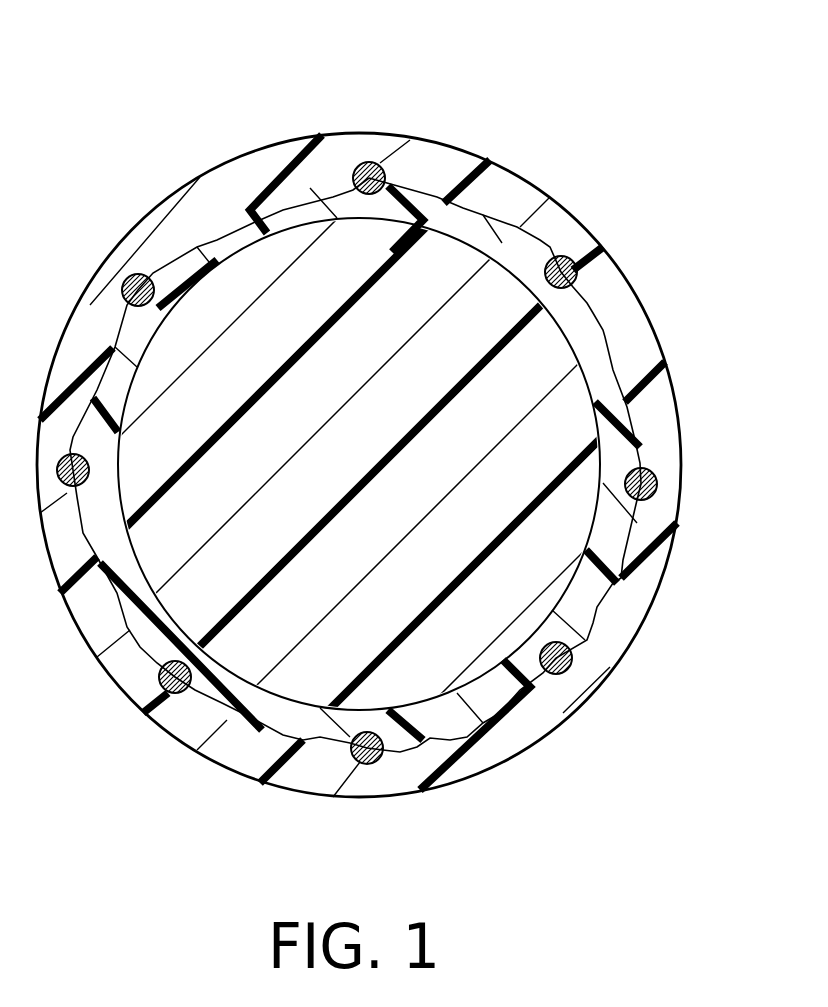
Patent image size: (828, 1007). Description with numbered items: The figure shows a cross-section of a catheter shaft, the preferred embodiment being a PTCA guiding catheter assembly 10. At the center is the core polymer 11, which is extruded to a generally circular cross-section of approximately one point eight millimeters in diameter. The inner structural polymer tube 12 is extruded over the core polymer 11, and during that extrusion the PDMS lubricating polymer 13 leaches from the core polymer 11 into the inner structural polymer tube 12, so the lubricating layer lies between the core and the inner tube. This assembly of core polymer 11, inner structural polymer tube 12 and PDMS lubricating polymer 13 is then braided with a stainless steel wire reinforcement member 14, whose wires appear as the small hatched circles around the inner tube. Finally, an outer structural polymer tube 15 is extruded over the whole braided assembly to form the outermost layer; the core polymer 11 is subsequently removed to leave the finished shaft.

The PTCA guiding catheter assembly 10 is at (243, 98).
The core polymer 11 is at (423, 250).
The inner structural polymer tube 12 is at (500, 243).
The PDMS lubricating polymer 13 is at (581, 383).
The stainless steel wire reinforcement member 14 is at (644, 447).
The outer structural polymer tube 15 is at (328, 153).